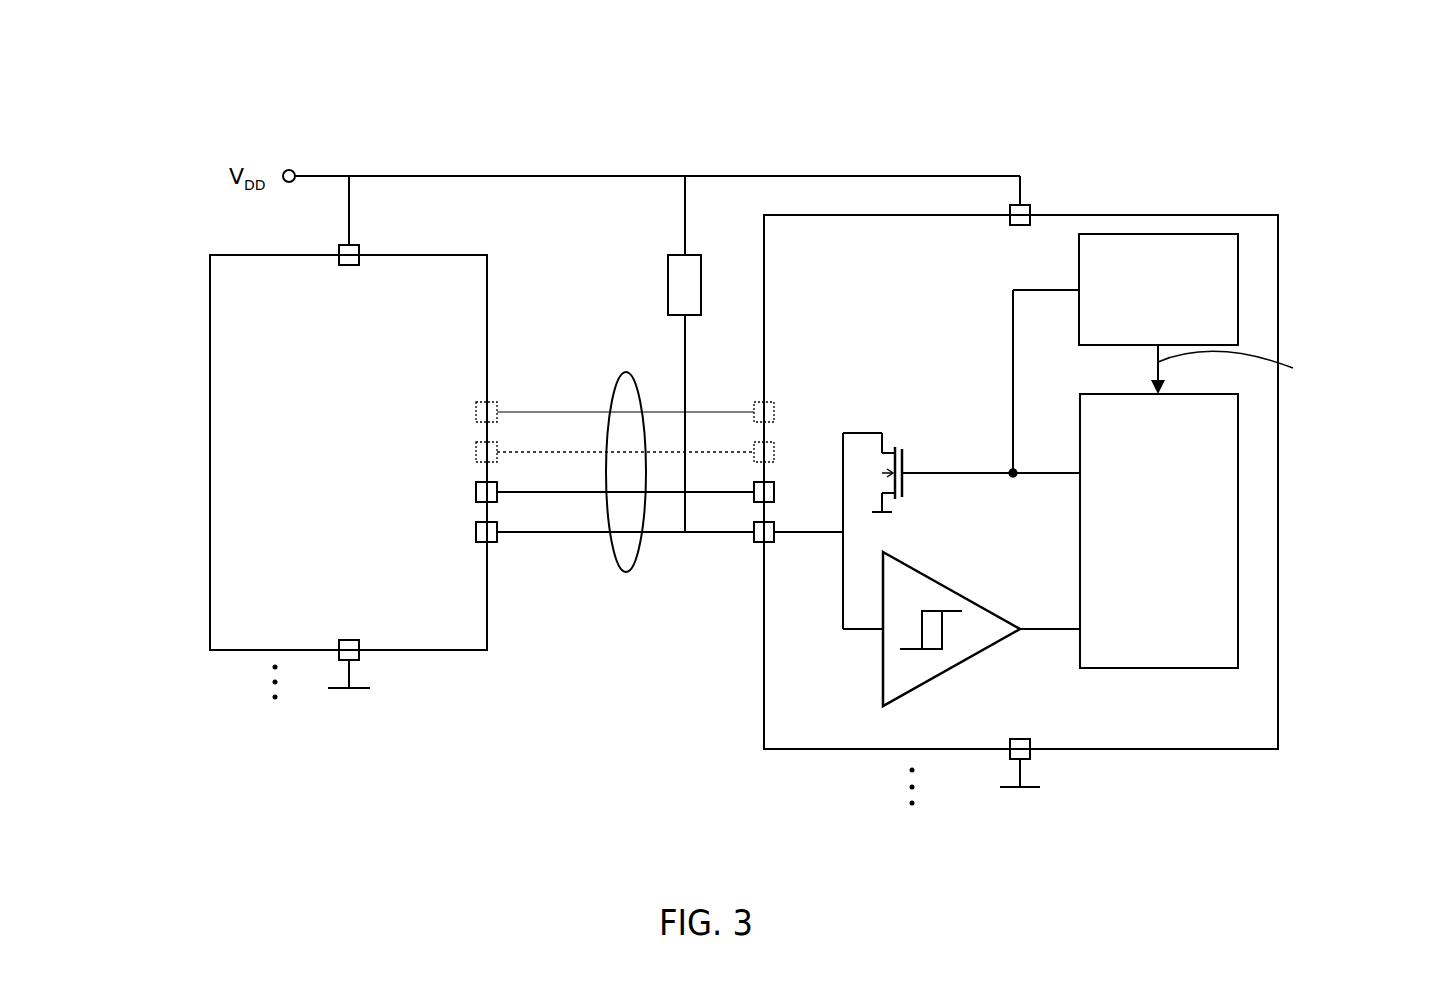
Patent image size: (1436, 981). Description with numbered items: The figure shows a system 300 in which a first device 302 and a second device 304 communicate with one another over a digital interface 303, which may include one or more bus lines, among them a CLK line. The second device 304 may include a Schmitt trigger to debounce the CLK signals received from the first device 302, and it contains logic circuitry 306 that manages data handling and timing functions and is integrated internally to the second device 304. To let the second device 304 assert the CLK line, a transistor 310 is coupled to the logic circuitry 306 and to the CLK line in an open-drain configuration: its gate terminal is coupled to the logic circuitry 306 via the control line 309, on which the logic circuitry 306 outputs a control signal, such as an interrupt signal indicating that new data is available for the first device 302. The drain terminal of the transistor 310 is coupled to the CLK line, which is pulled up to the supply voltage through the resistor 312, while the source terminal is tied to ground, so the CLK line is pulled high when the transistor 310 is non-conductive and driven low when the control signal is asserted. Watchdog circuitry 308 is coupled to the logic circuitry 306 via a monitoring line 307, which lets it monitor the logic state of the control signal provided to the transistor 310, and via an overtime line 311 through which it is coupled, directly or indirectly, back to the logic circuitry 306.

The system 300 is at (88, 42).
The first device 302 is at (353, 472).
The digital interface 303 is at (630, 503).
The second device 304 is at (1016, 505).
The logic circuitry 306 is at (1159, 531).
The monitoring line 307 is at (1012, 310).
The watchdog circuitry 308 is at (1158, 289).
The control line 309 is at (928, 475).
The transistor 310 is at (898, 442).
The overtime line 311 is at (1158, 362).
The resistor 312 is at (659, 354).